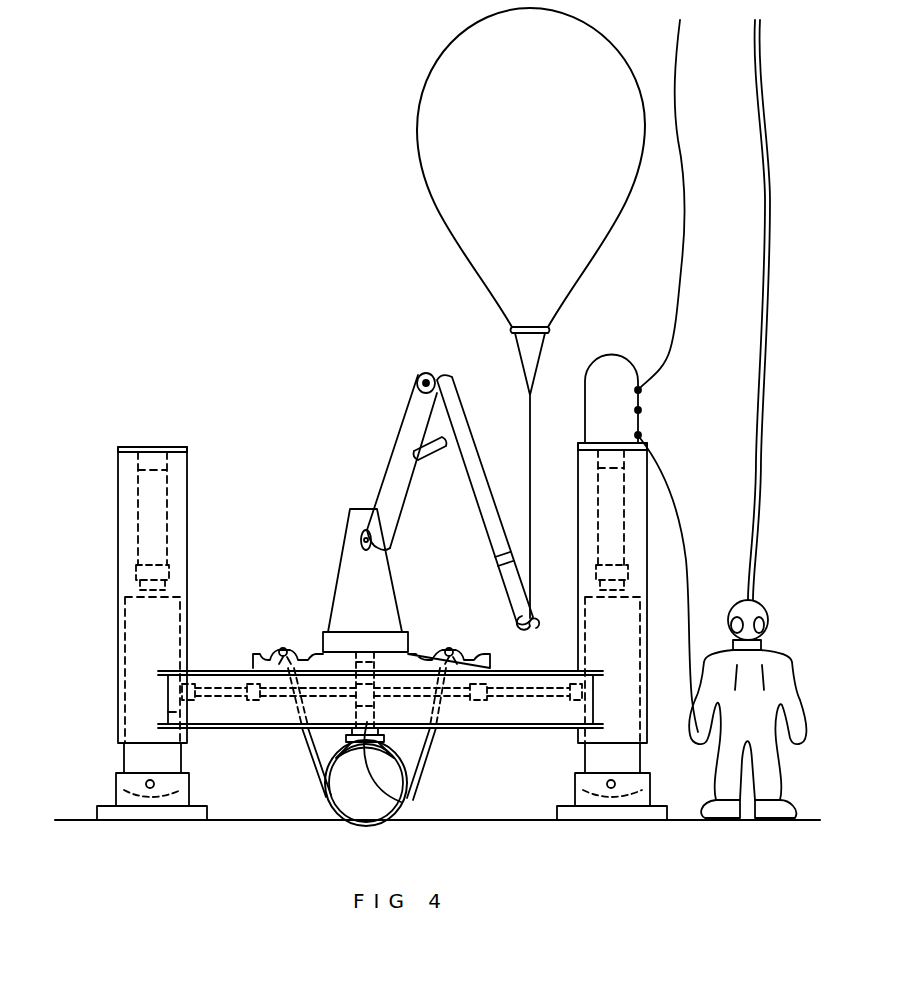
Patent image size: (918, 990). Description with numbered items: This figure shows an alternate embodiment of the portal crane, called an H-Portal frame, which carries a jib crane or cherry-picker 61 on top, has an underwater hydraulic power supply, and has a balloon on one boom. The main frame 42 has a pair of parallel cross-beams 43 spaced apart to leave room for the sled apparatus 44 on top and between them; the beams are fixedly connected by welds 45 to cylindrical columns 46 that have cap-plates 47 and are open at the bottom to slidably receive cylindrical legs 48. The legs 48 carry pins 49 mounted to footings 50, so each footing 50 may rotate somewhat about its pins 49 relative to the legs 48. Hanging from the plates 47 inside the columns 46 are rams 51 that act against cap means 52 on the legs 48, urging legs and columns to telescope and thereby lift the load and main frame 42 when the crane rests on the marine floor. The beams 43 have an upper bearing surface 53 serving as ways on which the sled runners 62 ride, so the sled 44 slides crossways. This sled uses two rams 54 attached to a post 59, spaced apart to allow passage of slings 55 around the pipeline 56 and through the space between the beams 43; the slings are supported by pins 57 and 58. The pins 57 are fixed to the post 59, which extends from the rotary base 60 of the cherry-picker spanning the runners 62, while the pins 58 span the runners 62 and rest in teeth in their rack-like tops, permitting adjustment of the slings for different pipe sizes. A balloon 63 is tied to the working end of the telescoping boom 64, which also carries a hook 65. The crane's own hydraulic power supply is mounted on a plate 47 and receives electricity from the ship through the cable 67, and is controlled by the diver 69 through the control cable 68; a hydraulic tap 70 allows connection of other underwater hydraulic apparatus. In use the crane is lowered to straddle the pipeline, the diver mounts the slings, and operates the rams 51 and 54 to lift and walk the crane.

The main frame 42 is at (80, 696).
The cross-beams 43 is at (562, 718).
The sled apparatus 44 is at (299, 598).
The welds 45 is at (176, 712).
The cylindrical columns 46 is at (138, 654).
The cap-plates 47 is at (125, 448).
The cylindrical legs 48 is at (135, 622).
The pins 49 is at (145, 784).
The footings 50 is at (106, 812).
The rams 51 is at (146, 527).
The cap means 52 is at (148, 594).
The upper bearing surface 53 is at (570, 672).
The rams 54 is at (368, 691).
The slings 55 is at (402, 766).
The pipeline 56 is at (400, 810).
The pins 57 is at (320, 737).
The pins 58 is at (285, 649).
The post 59 is at (398, 792).
The rotary base 60 is at (410, 640).
The cherry-picker 61 is at (330, 507).
The sled runners 62 is at (488, 662).
The balloon 63 is at (596, 232).
The telescoping boom 64 is at (495, 553).
The hook 65 is at (538, 629).
The cable 67 is at (681, 266).
The control cable 68 is at (688, 626).
The diver 69 is at (790, 660).
The hydraulic tap 70 is at (641, 410).